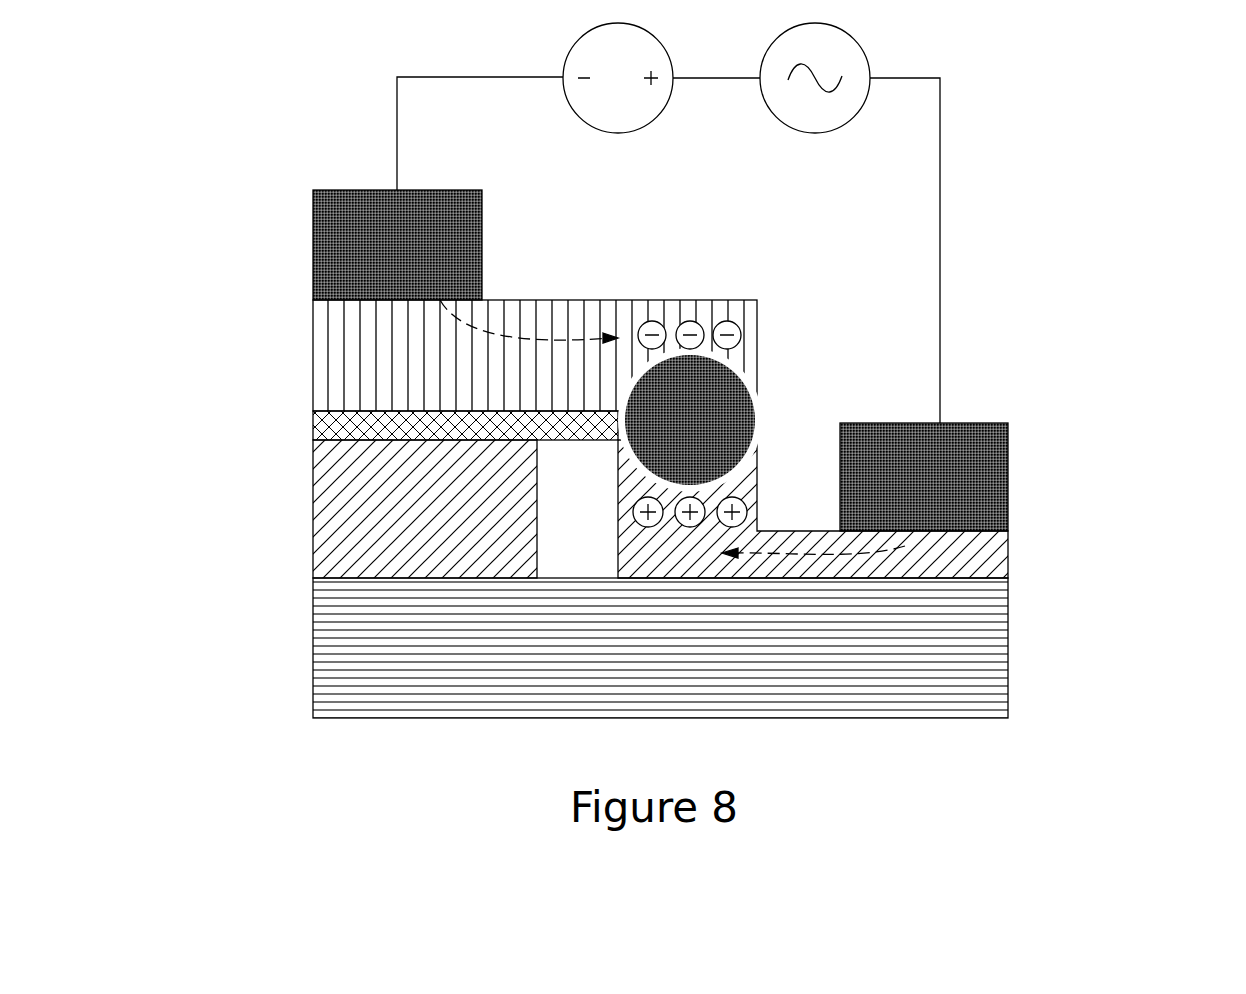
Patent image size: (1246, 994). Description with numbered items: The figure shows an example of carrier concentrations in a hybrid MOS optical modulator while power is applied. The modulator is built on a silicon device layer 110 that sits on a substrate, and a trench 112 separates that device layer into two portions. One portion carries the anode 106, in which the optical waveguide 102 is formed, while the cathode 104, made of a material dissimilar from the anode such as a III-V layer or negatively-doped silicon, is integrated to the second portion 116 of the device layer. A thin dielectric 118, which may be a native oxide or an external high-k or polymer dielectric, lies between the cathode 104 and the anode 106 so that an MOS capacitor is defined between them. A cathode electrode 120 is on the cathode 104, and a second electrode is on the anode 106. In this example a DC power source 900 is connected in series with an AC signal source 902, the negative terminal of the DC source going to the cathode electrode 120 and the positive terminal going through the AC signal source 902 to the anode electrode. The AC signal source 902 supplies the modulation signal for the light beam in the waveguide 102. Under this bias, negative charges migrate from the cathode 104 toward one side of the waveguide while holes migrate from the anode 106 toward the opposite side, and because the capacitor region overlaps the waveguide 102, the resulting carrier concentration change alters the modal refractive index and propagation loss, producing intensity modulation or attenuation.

The optical waveguide 102 is at (1008, 640).
The cathode 104 is at (313, 478).
The anode 106 is at (1008, 547).
The silicon device layer 110 is at (760, 410).
The trench 112 is at (313, 328).
The second portion of the device layer 116 is at (313, 231).
The thin dielectric 118 is at (1008, 465).
The cathode electrode 120 is at (313, 422).
The DC voltage source 900 is at (618, 133).
The AC voltage source 902 is at (815, 133).